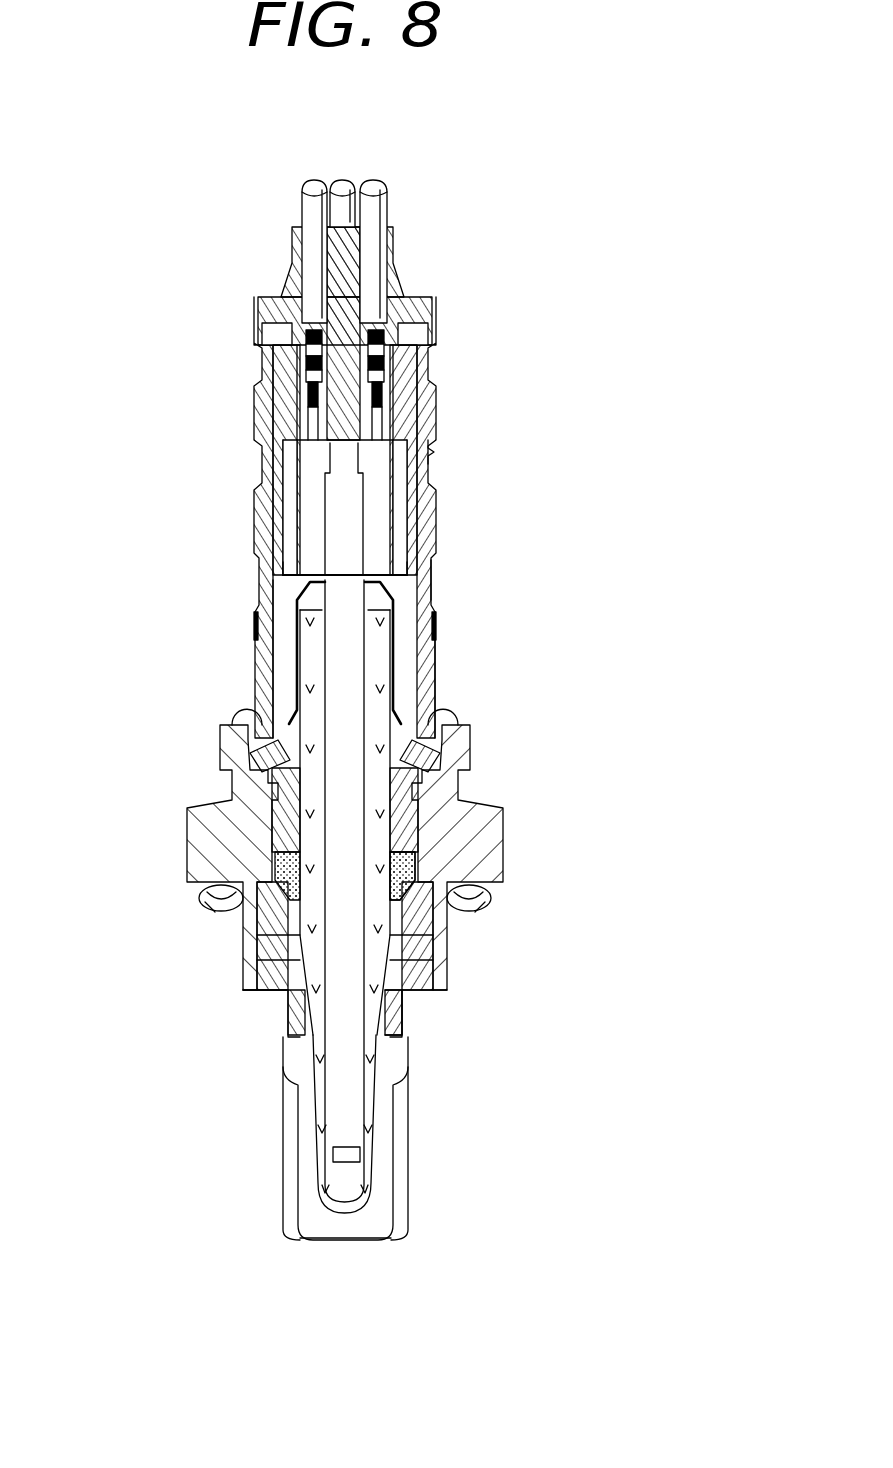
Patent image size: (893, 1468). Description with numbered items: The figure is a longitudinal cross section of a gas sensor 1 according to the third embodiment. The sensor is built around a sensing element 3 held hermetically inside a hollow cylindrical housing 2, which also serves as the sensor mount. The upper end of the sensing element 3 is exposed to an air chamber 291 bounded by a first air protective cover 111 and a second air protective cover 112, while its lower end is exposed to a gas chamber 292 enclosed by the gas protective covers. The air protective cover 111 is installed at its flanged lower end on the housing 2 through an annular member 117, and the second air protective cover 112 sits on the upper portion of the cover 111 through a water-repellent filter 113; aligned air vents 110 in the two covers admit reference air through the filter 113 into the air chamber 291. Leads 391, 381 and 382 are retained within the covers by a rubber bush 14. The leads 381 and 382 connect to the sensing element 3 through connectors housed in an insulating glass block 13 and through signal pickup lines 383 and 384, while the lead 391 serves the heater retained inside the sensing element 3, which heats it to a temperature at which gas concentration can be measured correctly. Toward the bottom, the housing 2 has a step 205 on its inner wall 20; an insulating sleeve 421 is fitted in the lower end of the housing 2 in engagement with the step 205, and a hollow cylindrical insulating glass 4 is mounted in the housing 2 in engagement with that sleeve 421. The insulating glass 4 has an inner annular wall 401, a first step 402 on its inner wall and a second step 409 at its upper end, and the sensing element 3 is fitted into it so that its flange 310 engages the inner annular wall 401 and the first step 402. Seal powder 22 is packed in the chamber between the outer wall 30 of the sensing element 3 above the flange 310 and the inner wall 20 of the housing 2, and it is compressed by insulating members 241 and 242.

The gas sensor 1 is at (137, 1073).
The housing 2 is at (465, 835).
The sensing element 3 is at (380, 1165).
The insulating glass 4 is at (407, 940).
The insulating glass block 13 is at (340, 367).
The rubber bush 14 is at (330, 247).
The inner wall 20 is at (397, 860).
The seal powder 22 is at (280, 843).
The outer wall 30 is at (380, 1095).
The air vents 110 is at (430, 400).
The air protective cover 111 is at (430, 648).
The air protective cover 112 is at (435, 578).
The water-repellent filter 113 is at (438, 447).
The annular member 117 is at (440, 722).
The step 205 is at (278, 985).
The ring 241 is at (283, 797).
The insulating member 242 is at (270, 763).
The air chamber 291 is at (285, 656).
The gas chamber 292 is at (375, 1217).
The flange 310 is at (383, 905).
The lead 381 is at (388, 212).
The lead 382 is at (313, 262).
The signal pickup line 383 is at (370, 532).
The signal pickup line 384 is at (300, 558).
The lead 391 is at (345, 182).
The inner annular wall 401 is at (280, 905).
The first step 402 is at (280, 968).
The second step 409 is at (283, 867).
The insulating sleeve 421 is at (392, 1000).